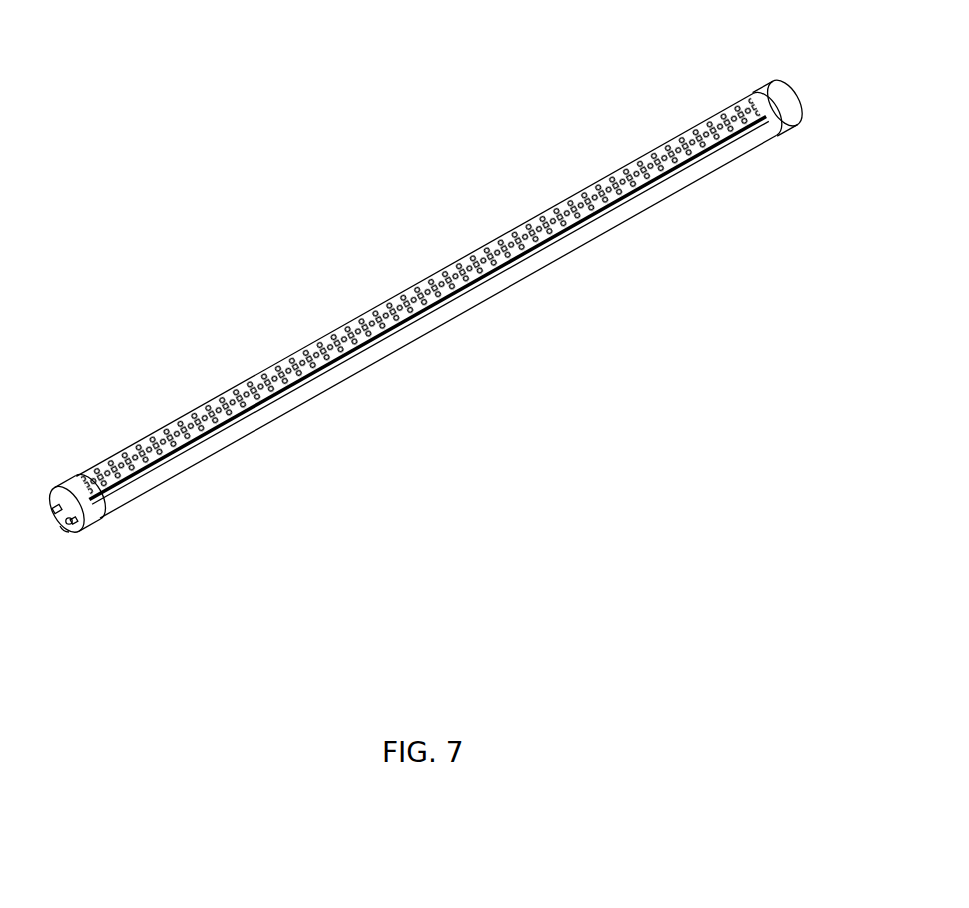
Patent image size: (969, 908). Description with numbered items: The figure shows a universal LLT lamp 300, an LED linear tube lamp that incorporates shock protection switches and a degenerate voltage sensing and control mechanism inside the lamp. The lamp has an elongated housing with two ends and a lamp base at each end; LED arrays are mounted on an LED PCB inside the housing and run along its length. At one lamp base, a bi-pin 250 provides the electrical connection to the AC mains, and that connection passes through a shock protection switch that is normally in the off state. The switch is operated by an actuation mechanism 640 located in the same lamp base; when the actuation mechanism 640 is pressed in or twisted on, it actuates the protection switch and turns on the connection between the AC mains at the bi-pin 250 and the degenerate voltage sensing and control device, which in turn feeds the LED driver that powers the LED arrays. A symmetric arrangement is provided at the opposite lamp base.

The universal LLT lamp 300 is at (414, 204).
The bi-pin 250 is at (84, 528).
The actuation mechanism 640 is at (66, 532).